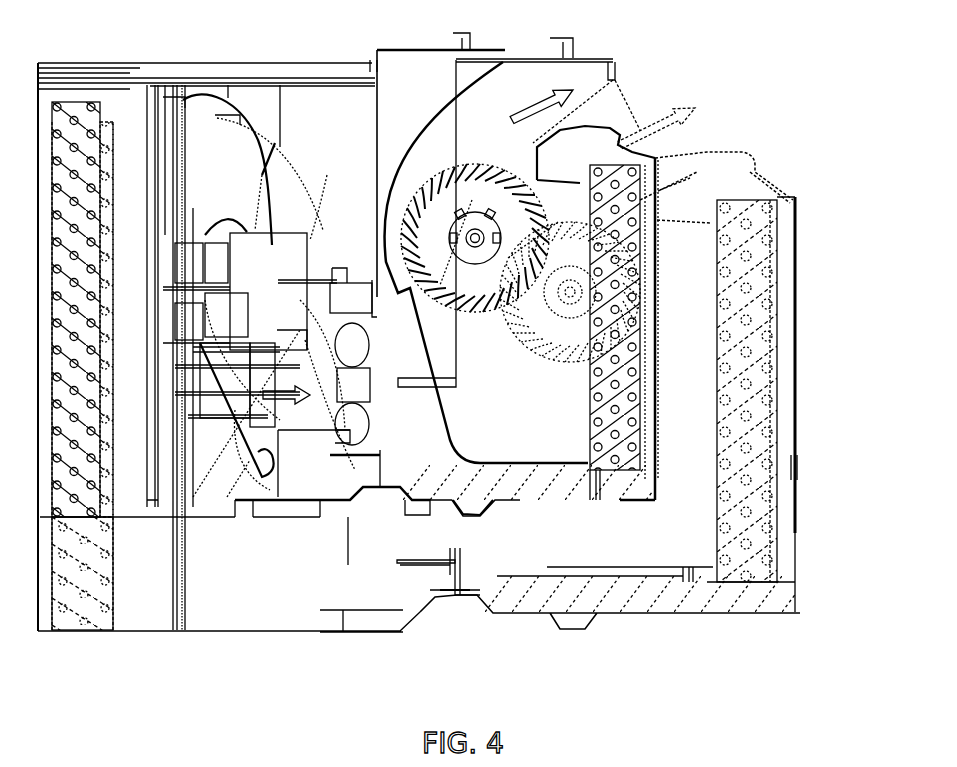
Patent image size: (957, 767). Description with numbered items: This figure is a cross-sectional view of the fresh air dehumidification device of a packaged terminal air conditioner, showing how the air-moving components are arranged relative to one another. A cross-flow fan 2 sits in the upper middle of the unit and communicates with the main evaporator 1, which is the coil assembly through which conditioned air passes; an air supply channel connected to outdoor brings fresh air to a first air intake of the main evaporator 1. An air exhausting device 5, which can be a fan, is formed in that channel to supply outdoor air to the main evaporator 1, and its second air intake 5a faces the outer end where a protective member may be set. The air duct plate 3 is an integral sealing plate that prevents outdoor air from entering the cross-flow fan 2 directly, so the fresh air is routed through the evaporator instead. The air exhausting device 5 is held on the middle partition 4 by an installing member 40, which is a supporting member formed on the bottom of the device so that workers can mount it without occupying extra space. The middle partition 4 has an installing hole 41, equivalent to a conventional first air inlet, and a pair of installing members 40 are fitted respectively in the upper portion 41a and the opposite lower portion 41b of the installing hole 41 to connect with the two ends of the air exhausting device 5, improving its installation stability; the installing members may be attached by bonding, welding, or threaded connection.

The main evaporator 1 is at (525, 515).
The cross-flow fan 2 is at (630, 205).
The air duct plate 3 is at (548, 220).
The middle partition 4 is at (378, 107).
The air exhausting device 5 is at (350, 395).
The second air intake 5a is at (329, 428).
The installing member 40 is at (448, 685).
The installing hole 41 is at (527, 685).
The upper portion 41a is at (343, 511).
The lower portion 41b is at (488, 516).